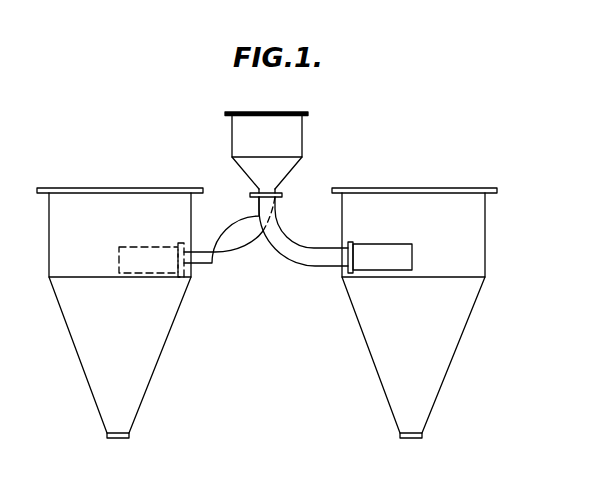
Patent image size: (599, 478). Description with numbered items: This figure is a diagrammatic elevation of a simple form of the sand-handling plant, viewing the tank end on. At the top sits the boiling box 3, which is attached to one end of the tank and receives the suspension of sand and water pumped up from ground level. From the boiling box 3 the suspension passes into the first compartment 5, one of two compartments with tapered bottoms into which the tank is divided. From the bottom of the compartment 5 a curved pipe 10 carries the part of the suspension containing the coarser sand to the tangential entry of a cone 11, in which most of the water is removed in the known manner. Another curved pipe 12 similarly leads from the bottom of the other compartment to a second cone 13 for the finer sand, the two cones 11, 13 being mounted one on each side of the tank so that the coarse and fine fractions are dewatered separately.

The boiling box 3 is at (275, 131).
The first compartment 5 is at (265, 172).
The curved pipe 10 is at (290, 250).
The cone 11 is at (418, 215).
The curved pipe 12 is at (220, 262).
The second cone 13 is at (133, 215).